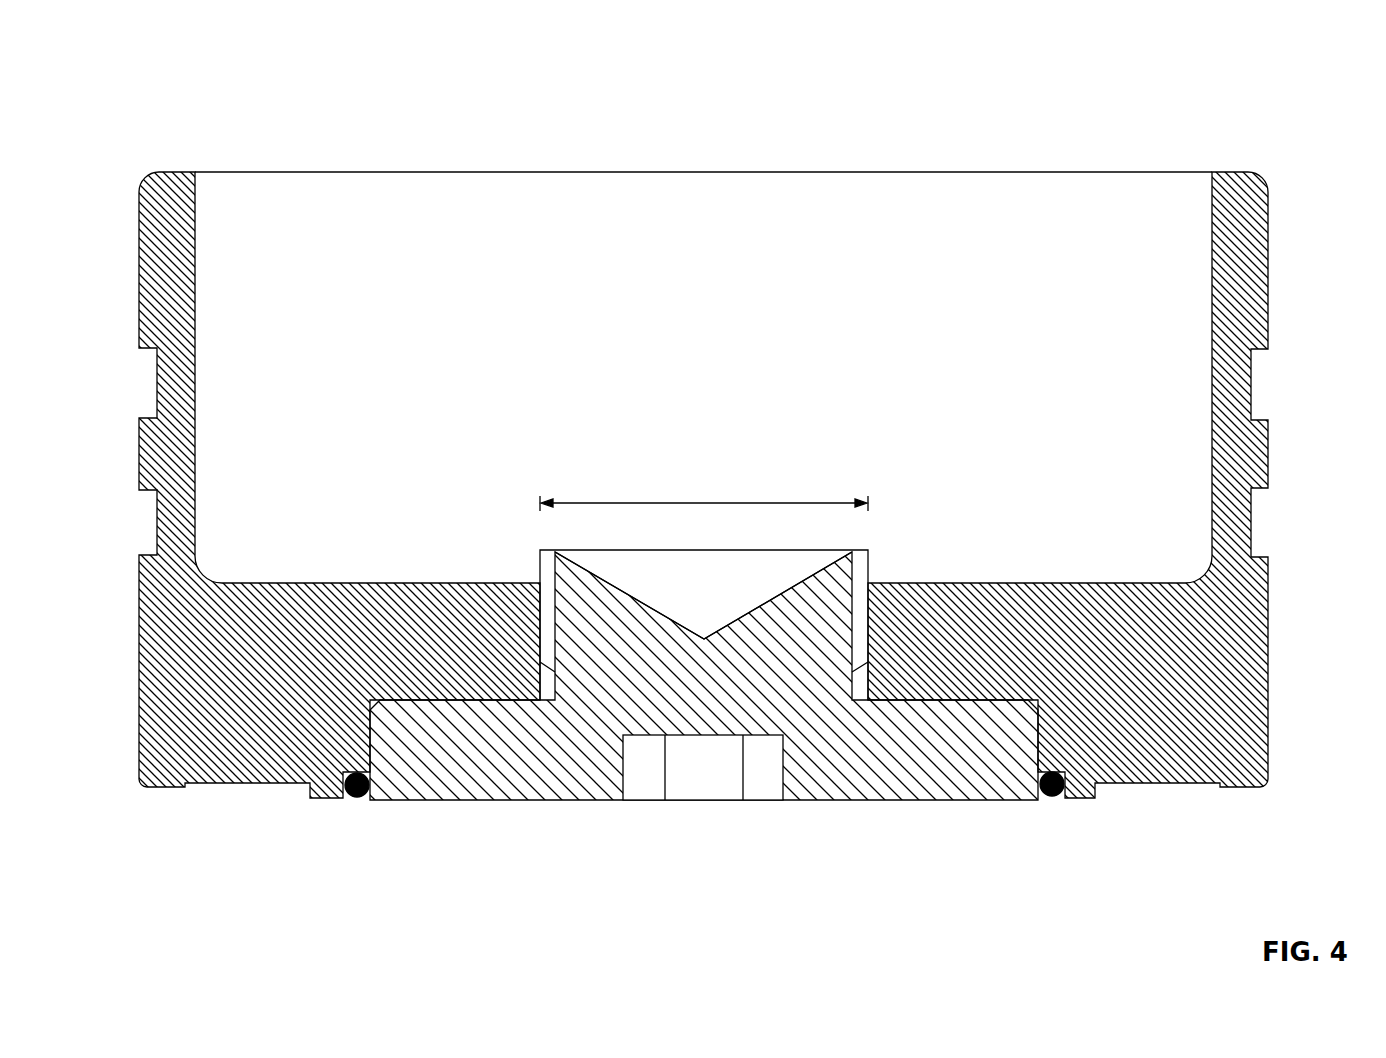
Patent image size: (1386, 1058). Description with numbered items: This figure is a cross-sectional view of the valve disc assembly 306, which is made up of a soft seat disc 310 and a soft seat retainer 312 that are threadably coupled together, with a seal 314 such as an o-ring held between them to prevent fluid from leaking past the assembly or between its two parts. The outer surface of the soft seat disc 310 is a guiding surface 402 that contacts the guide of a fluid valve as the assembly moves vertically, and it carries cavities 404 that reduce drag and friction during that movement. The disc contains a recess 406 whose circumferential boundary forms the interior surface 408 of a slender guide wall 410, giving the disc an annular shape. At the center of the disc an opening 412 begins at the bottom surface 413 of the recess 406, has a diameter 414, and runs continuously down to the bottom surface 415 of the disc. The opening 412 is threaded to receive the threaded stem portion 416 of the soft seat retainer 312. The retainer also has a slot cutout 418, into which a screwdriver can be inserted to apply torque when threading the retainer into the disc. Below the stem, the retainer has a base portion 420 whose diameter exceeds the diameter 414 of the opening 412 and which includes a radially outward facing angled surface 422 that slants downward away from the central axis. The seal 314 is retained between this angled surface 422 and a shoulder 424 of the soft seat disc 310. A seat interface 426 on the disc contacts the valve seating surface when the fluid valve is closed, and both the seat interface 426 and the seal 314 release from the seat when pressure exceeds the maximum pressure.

The valve disc assembly 306 is at (1192, 70).
The soft seat disc 310 is at (1287, 235).
The soft seat retainer 312 is at (517, 814).
The seal 314 is at (348, 800).
The guiding surface 402 is at (140, 228).
The cavities 404 is at (157, 392).
The recess 406 is at (694, 160).
The interior surface 408 is at (195, 292).
The guide wall 410 is at (170, 205).
The opening 412 is at (704, 482).
The bottom surface 413 is at (335, 582).
The diameter 414 is at (834, 502).
The bottom surface 415 is at (265, 787).
The stem portion 416 is at (823, 588).
The slot cutout 418 is at (715, 782).
The base portion 420 is at (893, 782).
The angled surface 422 is at (1040, 790).
The shoulder 424 is at (1070, 787).
The seat interface 426 is at (317, 800).